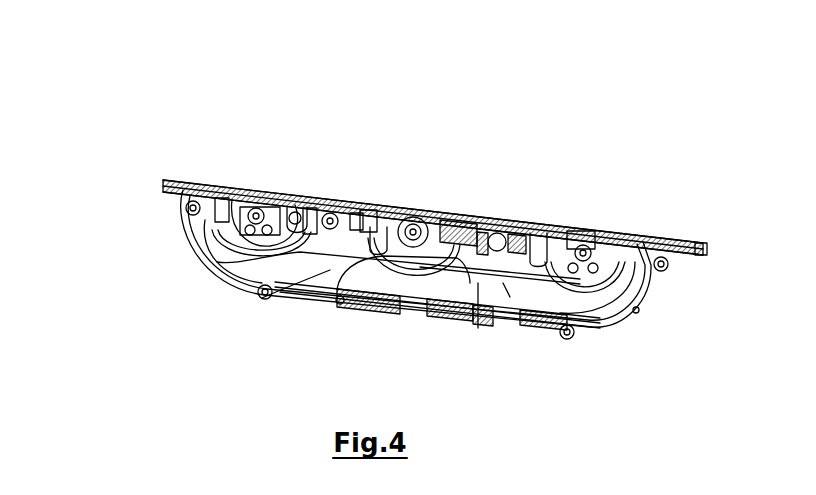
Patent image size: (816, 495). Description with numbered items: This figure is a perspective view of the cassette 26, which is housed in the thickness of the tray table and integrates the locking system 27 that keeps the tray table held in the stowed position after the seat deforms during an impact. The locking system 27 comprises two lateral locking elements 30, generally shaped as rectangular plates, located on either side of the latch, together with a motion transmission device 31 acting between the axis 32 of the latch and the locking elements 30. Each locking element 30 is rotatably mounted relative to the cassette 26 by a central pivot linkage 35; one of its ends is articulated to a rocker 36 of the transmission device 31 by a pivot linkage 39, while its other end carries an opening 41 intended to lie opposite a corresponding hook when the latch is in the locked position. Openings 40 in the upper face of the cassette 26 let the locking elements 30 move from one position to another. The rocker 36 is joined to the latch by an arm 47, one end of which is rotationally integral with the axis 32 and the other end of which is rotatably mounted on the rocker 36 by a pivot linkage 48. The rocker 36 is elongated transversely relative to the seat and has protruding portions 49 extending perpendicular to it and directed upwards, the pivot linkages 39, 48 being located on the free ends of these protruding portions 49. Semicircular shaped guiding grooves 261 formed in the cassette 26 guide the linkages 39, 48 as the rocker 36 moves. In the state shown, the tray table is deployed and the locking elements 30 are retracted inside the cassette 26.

The cassette 26 is at (220, 273).
The semicircular shaped guiding grooves 261 is at (240, 297).
The locking system 27 is at (292, 196).
The lateral locking elements 30 is at (236, 184).
The motion transmission device 31 is at (583, 331).
The axis 32 is at (418, 213).
The central pivot linkage 35 is at (253, 192).
The rocker 36 is at (265, 302).
The pivot linkage 39 is at (313, 195).
The openings 40 is at (240, 187).
The opening 41 is at (180, 210).
The arm 47 is at (396, 312).
The pivot linkage 48 is at (501, 233).
The protruding portions 49 is at (481, 328).